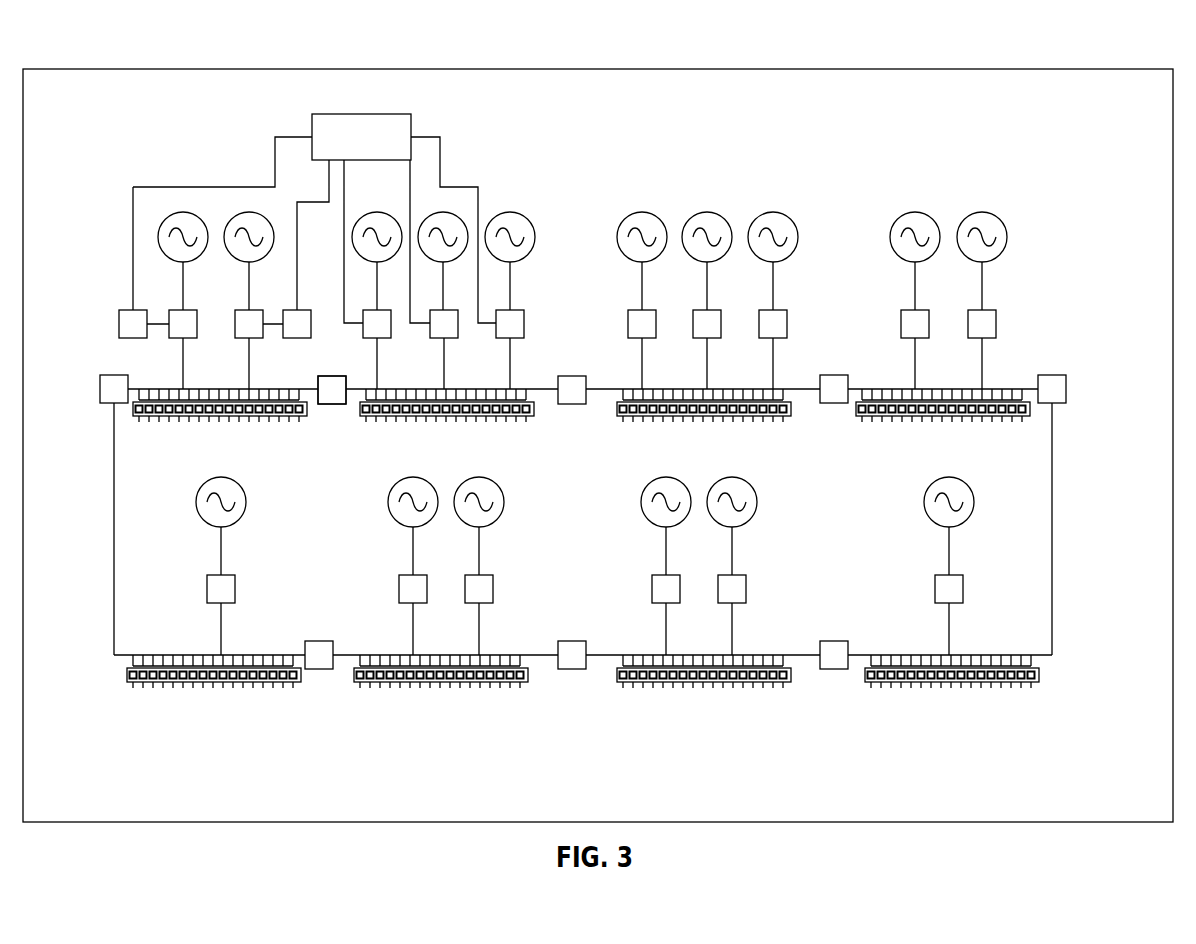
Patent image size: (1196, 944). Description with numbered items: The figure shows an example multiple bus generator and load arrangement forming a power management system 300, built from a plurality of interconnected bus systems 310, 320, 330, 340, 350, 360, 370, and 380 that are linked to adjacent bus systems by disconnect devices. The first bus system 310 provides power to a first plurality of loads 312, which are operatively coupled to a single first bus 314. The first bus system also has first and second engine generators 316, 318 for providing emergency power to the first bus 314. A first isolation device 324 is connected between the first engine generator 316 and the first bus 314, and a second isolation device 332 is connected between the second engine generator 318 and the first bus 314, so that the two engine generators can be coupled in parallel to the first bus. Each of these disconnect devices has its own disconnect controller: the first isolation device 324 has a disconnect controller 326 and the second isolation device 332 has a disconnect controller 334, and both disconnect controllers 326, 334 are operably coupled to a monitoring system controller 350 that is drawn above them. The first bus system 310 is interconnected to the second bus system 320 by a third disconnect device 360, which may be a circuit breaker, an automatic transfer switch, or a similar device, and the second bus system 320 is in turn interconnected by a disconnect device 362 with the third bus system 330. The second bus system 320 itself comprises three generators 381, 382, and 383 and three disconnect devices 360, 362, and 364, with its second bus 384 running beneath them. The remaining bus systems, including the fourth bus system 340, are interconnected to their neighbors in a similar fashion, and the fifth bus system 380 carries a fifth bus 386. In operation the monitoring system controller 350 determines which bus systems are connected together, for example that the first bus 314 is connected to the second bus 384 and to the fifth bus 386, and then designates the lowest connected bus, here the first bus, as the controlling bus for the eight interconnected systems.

The power management system 300 is at (1100, 56).
The first bus system 310 is at (257, 128).
The first plurality of loads 312 is at (270, 422).
The first bus 314 is at (292, 388).
The first engine generator 316 is at (160, 232).
The second engine generator 318 is at (249, 212).
The second bus system 320 is at (457, 162).
The first isolation device 324 is at (175, 338).
The disconnect controller 326 is at (119, 324).
The third bus system 330 is at (714, 194).
The second isolation device 332 is at (247, 309).
The disconnect controller 334 is at (303, 338).
The fourth bus system 340 is at (954, 194).
The monitoring system controller 350 is at (376, 103).
The third disconnect device 360 is at (380, 338).
The disconnect device 362 is at (447, 310).
The disconnect device 364 is at (524, 322).
The bus system 370 is at (493, 688).
The fifth bus system 380 is at (268, 688).
The generator 381 is at (377, 212).
The generator 382 is at (443, 212).
The generator 383 is at (536, 238).
The second bus 384 is at (470, 388).
The fifth bus 386 is at (255, 655).